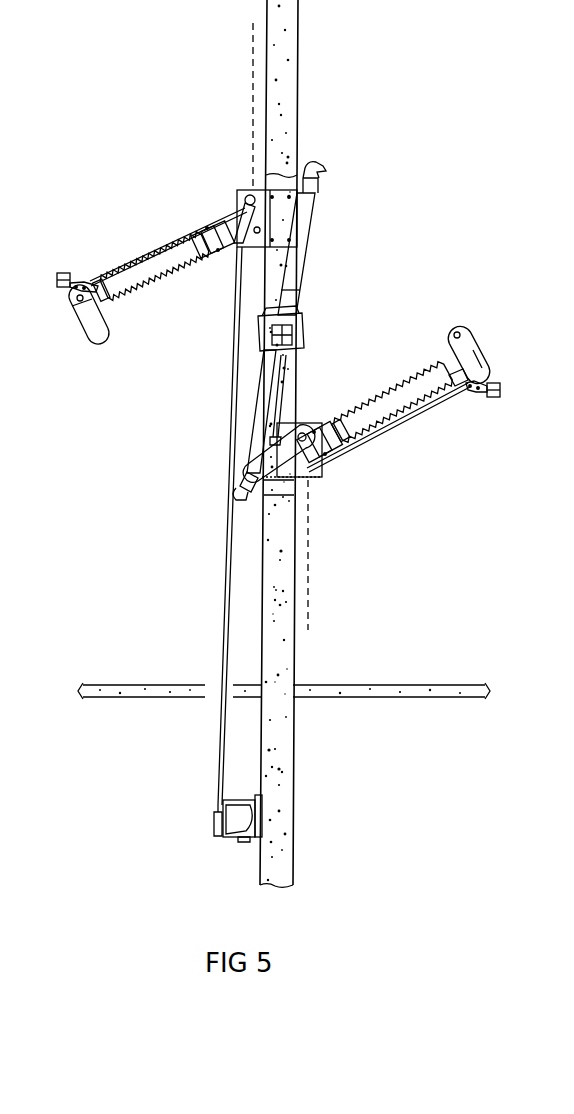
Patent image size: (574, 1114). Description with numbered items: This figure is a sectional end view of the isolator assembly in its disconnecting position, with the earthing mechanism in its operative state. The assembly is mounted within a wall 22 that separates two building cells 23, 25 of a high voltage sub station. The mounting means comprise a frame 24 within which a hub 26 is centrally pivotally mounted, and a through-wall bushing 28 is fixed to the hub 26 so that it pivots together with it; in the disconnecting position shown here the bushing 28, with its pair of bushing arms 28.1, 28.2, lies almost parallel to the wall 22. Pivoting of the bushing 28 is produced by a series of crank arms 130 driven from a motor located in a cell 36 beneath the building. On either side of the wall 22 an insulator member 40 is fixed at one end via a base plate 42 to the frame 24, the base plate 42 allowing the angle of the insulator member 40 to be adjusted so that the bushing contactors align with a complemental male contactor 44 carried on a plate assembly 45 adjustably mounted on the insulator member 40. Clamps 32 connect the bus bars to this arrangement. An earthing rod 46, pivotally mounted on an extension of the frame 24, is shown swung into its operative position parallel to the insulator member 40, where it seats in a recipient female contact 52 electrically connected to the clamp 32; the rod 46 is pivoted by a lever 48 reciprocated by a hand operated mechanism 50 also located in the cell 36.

The wall 22 is at (285, 82).
The building cell 23 is at (180, 52).
The frame 24 is at (282, 215).
The building cell 25 is at (452, 52).
The hub 26 is at (308, 343).
The bushing 28 is at (263, 350).
The bushing arm 28.1 is at (262, 407).
The bushing arm 28.2 is at (285, 293).
The clamp 32 is at (62, 274).
The cell 36 is at (166, 755).
The insulator member 40 is at (367, 392).
The base plate 42 is at (233, 235).
The male contactor 44 is at (104, 337).
The plate assembly 45 is at (84, 305).
The earthing rod 46 is at (165, 240).
The lever 48 is at (227, 552).
The hand operated mechanism 50 is at (250, 838).
The female contact 52 is at (88, 274).
The crank arms 130 is at (241, 443).